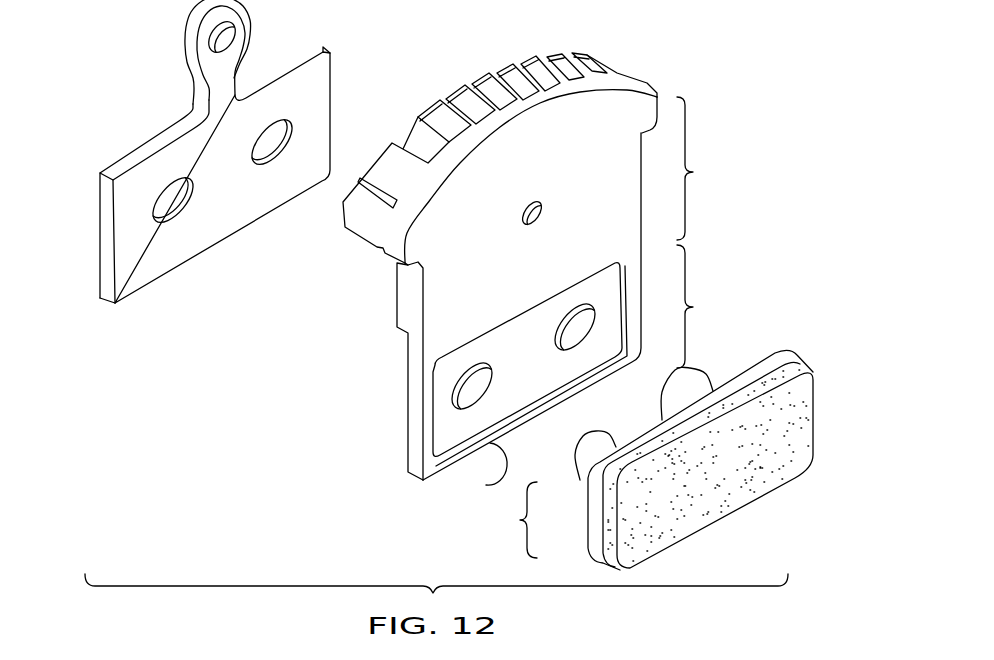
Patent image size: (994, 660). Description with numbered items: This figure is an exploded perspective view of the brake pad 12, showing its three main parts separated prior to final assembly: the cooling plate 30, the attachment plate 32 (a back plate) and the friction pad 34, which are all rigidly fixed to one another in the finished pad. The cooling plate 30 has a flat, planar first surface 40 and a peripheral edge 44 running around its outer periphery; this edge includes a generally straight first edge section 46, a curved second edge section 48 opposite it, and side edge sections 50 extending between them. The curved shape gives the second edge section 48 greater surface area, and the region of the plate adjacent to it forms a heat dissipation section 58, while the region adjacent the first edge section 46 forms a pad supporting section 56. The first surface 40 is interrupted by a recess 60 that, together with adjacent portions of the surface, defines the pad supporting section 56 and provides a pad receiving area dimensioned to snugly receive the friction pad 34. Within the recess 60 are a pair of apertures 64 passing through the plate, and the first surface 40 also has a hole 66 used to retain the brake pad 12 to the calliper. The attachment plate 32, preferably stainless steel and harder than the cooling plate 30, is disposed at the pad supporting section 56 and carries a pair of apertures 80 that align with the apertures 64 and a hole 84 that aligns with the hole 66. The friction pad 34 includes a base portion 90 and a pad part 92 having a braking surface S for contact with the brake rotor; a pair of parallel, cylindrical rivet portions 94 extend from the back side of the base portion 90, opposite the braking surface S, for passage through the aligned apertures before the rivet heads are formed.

The brake pad 12 is at (664, 48).
The cooling plate 30 is at (587, 167).
The attachment plate 32 is at (310, 100).
The friction pad 34 is at (514, 520).
The first surface 40 is at (603, 208).
The peripheral edge 44 is at (593, 83).
The first edge section 46 is at (486, 485).
The second edge section 48 is at (523, 110).
The side edge sections 50 is at (407, 302).
The pad supporting section 56 is at (702, 306).
The heat dissipation section 58 is at (702, 168).
The recess 60 is at (523, 383).
The apertures 64 is at (566, 348).
The hole 66 is at (537, 217).
The apertures 80 is at (175, 213).
The hole 84 is at (226, 37).
The base portion 90 is at (593, 507).
The pad part 92 is at (607, 538).
The rivet portions 94 is at (700, 377).
The braking surface S is at (723, 460).